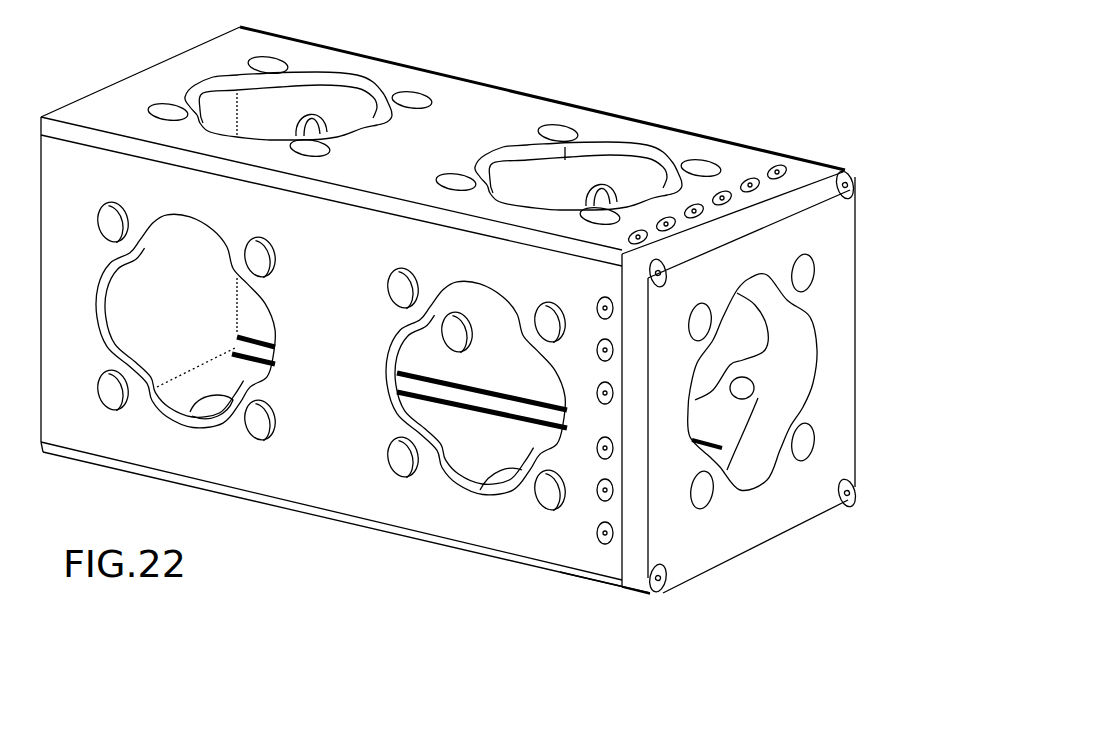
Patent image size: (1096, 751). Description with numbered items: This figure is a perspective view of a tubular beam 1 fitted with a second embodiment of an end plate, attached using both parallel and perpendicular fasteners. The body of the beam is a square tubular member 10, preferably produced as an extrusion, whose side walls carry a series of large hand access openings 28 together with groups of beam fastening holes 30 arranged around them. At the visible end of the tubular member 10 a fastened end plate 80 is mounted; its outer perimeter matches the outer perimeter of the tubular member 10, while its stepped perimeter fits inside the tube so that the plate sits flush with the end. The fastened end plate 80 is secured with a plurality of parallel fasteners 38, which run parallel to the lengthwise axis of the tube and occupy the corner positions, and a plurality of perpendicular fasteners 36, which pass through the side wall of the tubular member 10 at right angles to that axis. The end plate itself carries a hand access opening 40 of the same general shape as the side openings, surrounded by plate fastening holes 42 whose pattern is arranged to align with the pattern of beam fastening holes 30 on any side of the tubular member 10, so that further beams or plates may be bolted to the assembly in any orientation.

The tubular beam 1 is at (704, 98).
The tubular member 10 is at (527, 97).
The hand access openings 28 is at (448, 548).
The beam fastening holes 30 is at (362, 527).
The perpendicular fasteners 36 is at (577, 578).
The parallel fasteners 38 is at (663, 593).
The hand access opening 40 is at (855, 424).
The plate fastening holes 42 is at (855, 256).
The fastened end plate 80 is at (855, 362).